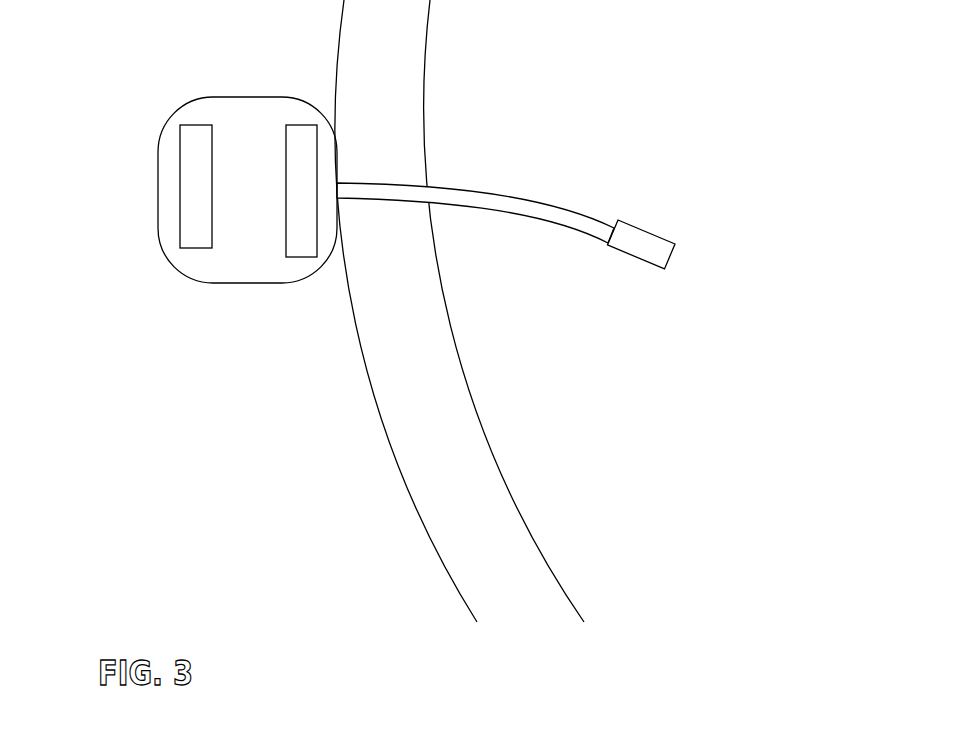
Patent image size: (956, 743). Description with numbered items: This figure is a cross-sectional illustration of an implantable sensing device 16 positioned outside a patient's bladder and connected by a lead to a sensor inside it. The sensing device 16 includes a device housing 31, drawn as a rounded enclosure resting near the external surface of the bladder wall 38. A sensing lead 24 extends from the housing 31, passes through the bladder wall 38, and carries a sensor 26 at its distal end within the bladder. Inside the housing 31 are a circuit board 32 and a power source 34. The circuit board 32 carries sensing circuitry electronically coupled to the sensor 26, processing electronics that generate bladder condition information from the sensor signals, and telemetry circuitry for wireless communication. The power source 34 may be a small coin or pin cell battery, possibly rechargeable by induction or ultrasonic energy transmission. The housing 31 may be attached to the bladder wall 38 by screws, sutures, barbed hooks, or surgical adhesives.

The sensing device 16 is at (215, 200).
The device housing 31 is at (247, 117).
The circuit board 32 is at (307, 132).
The power source 34 is at (193, 185).
The sensing lead 24 is at (468, 192).
The sensor 26 is at (648, 227).
The bladder wall 38 is at (447, 393).